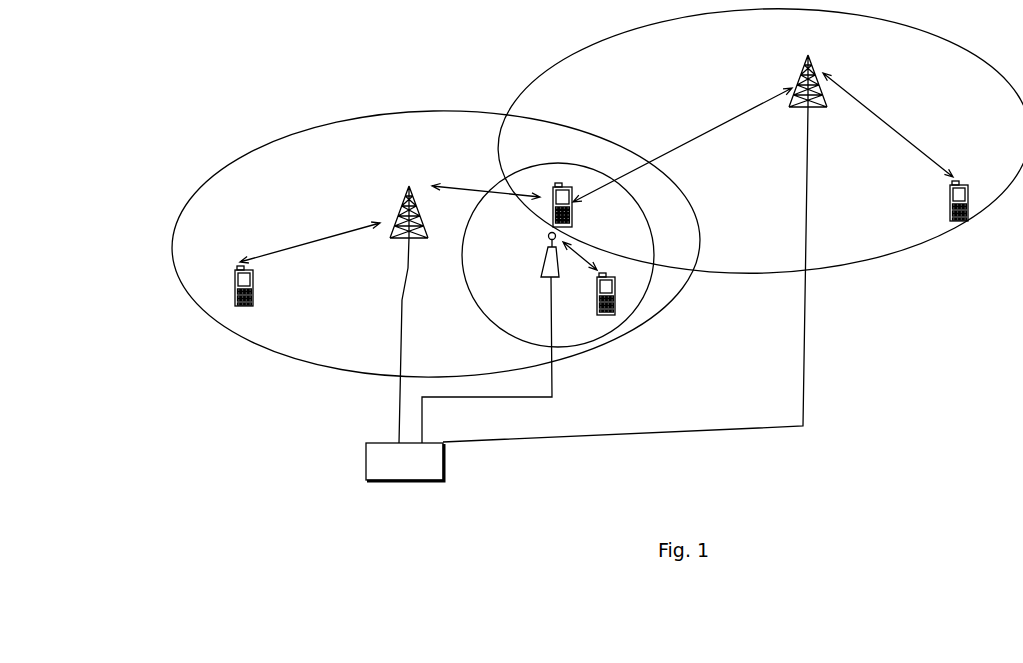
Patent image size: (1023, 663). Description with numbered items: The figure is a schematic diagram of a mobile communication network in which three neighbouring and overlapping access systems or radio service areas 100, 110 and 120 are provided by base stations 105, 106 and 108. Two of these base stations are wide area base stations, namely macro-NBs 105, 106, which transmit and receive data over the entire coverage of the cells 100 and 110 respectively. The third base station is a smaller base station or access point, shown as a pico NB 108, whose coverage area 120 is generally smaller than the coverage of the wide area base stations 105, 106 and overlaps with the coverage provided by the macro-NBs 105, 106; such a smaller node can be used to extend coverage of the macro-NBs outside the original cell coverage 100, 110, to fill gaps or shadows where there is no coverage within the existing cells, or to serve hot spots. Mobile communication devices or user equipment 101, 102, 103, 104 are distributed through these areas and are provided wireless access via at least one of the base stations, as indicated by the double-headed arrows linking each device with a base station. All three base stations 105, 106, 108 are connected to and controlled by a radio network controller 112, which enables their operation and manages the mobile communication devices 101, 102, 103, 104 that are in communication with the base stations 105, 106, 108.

The radio service area 100 is at (221, 138).
The radio service area 110 is at (539, 63).
The radio service area 120 is at (663, 205).
The user equipment 101 is at (235, 303).
The user equipment 102 is at (948, 220).
The user equipment 103 is at (613, 310).
The user equipment 104 is at (550, 188).
The macro-NB 105 is at (398, 218).
The macro-NB 106 is at (797, 85).
The pico NB 108 is at (538, 275).
The radio network controller 112 is at (365, 457).